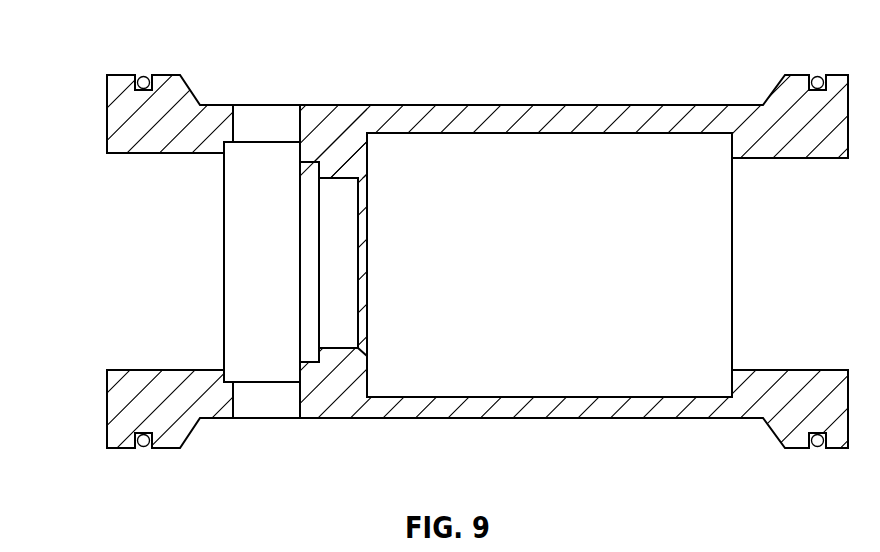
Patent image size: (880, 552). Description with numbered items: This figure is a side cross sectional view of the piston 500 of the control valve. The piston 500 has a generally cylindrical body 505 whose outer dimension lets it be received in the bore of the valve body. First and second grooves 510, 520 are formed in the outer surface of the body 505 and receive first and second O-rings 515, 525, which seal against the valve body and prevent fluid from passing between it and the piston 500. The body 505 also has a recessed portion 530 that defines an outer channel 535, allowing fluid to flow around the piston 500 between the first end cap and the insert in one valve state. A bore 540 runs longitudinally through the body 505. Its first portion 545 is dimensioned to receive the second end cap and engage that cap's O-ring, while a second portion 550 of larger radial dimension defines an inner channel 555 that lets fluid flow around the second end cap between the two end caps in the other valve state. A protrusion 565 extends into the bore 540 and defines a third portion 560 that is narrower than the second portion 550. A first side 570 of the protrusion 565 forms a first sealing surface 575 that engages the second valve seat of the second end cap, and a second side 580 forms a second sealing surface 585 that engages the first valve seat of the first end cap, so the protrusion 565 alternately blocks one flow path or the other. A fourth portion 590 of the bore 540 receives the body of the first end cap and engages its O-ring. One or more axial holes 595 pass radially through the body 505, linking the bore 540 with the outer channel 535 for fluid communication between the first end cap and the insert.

The piston 500 is at (118, 31).
The body 505 is at (117, 405).
The first groove 510 is at (151, 70).
The first O-ring 515 is at (145, 447).
The second groove 520 is at (822, 70).
The second O-ring 525 is at (816, 446).
The recessed portion 530 is at (470, 408).
The outer channel 535 is at (454, 85).
The bore 540 is at (571, 278).
The first portion 545 is at (792, 362).
The second portion 550 is at (663, 388).
The inner channel 555 is at (579, 140).
The third portion 560 is at (339, 339).
The protrusion 565 is at (357, 153).
The first side 570 is at (367, 383).
The first sealing surface 575 is at (363, 348).
The second side 580 is at (296, 366).
The second sealing surface 585 is at (296, 360).
The fourth portion 590 is at (155, 366).
The axial holes 595 is at (300, 123).